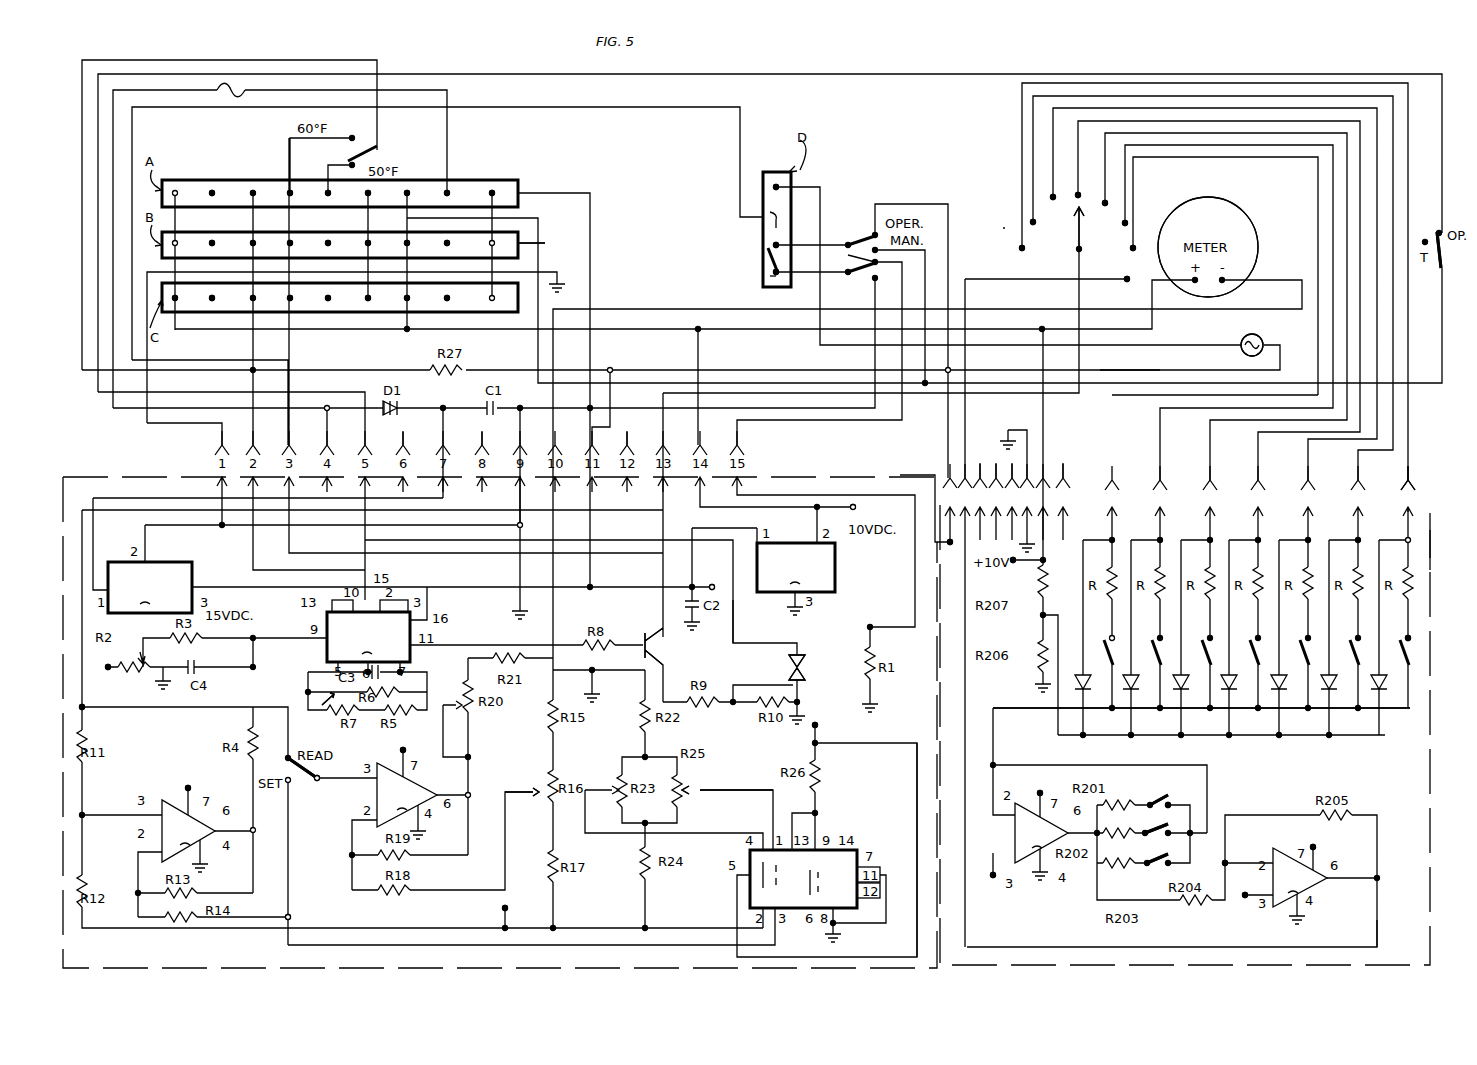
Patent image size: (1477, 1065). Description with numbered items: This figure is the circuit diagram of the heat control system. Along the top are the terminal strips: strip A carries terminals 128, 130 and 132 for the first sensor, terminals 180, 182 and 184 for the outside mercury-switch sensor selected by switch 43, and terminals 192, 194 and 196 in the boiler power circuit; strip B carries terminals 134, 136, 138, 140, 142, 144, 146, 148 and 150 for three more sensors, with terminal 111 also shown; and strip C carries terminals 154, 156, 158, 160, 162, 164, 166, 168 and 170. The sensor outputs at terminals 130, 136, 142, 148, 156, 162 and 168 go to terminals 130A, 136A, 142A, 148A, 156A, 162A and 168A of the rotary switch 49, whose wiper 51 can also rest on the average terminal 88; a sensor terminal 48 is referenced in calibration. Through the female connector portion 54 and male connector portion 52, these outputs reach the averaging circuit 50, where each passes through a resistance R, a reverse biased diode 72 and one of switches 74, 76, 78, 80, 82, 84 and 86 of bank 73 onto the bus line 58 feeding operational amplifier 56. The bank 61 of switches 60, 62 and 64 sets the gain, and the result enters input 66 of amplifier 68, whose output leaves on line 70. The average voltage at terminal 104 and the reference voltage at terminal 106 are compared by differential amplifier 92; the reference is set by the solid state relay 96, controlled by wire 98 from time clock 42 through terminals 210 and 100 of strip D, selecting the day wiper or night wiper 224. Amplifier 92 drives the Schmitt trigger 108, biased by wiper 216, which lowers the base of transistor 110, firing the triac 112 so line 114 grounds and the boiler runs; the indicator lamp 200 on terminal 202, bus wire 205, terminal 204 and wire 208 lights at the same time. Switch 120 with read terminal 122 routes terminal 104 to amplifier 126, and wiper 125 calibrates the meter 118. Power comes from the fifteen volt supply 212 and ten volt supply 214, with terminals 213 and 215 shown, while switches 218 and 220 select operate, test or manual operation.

The switch 43 is at (361, 146).
The terminal of terminal strip A 128 is at (175, 190).
The terminal of terminal strip A 130 is at (212, 191).
The terminal of terminal strip A 132 is at (250, 191).
The terminal of terminal strip A 180 is at (288, 192).
The terminal of terminal strip A 182 is at (326, 192).
The terminal of terminal strip A 184 is at (354, 195).
The terminal of terminal strip A 192 is at (408, 192).
The terminal of terminal strip A 194 is at (448, 192).
The terminal of terminal strip A 196 is at (493, 192).
The terminal of terminal strip B 134 is at (176, 242).
The terminal of terminal strip B 136 is at (213, 242).
The row B contact 111 is at (255, 214).
The terminal of terminal strip B 138 is at (327, 242).
The terminal of terminal strip B 142 is at (329, 241).
The terminal of terminal strip B 144 is at (369, 241).
The terminal of terminal strip B 140 is at (292, 246).
The terminal of terminal strip B 146 is at (409, 246).
The terminal of terminal strip B 148 is at (449, 246).
The terminal of terminal strip B 150 is at (545, 244).
The terminal of terminal strip C 154 is at (177, 302).
The terminal of terminal strip C 156 is at (215, 316).
The terminal of terminal strip C 158 is at (252, 302).
The terminal of terminal strip C 160 is at (292, 302).
The terminal of terminal strip C 162 is at (334, 316).
The terminal of terminal strip C 164 is at (374, 316).
The terminal of terminal strip C 166 is at (419, 316).
The terminal of terminal strip C 168 is at (459, 316).
The terminal of terminal strip C 170 is at (500, 316).
The terminal of terminal strip D 202 is at (781, 186).
The bus wire 205 is at (762, 216).
The terminal of terminal strip D 204 is at (775, 225).
The terminal of terminal strip D 210 is at (768, 246).
The time clock 42 is at (760, 266).
The terminal of terminal strip D 100 is at (765, 279).
The switch 220 is at (840, 268).
The rotary switch 49 is at (998, 228).
The terminal of rotary switch 142A is at (1033, 219).
The terminal of rotary switch 136A is at (1041, 249).
The terminal of rotary switch 130A is at (1028, 236).
The terminal of rotary switch 162A is at (1106, 229).
The wiper 51 is at (1081, 247).
The terminal of rotary switch 148A is at (1079, 195).
The terminal of rotary switch 156A is at (1106, 203).
The terminal of rotary switch 168A is at (1115, 261).
The electric meter 118 is at (1251, 214).
The average terminal 88 is at (1115, 292).
The L.E.D. indicator lamp 200 is at (1252, 337).
The wire 208 is at (1165, 359).
The switch 218 is at (1442, 265).
The female connector portion 54 is at (1411, 480).
The male connector portion 52 is at (1413, 505).
The averaging circuit 50 is at (1443, 582).
The bank of switches 73 is at (1417, 641).
The 10 volt supply terminal 215 is at (681, 709).
The 15 volt supply terminal 213 is at (821, 724).
The 15 volt supply 212 is at (586, 788).
The 10 volt supply 214 is at (796, 567).
The Schmitt trigger 108 is at (368, 631).
The transistor 110 is at (655, 629).
The triac 112 is at (800, 665).
The line 114 is at (752, 648).
The terminal 104 is at (90, 712).
The read terminal 122 is at (286, 758).
The switch 120 is at (303, 779).
The differential amplifier 92 is at (188, 831).
The amplifier 126 is at (443, 695).
The wiper of potentiometer R16 125 is at (505, 788).
The terminal 106 is at (292, 917).
The solid state relay 96 is at (859, 850).
The wire 98 is at (917, 767).
The reverse biased diodes 72 is at (1385, 717).
The switch 86 is at (1100, 645).
The switch 84 is at (1148, 645).
The switch 82 is at (1198, 645).
The switch 80 is at (1246, 645).
The switch 78 is at (1296, 645).
The switch 76 is at (1346, 645).
The switch 74 is at (1394, 645).
The bus line 58 is at (1201, 725).
The operational amplifier 56 is at (1041, 833).
The bank of switches 61 is at (1148, 790).
The switch 60 is at (1175, 791).
The switch 62 is at (1149, 824).
The switch 64 is at (1160, 865).
The input 66 is at (1225, 863).
The amplifier 68 is at (1300, 877).
The line 70 is at (1377, 930).
The terminal 48 is at (108, 670).
The wiper of potentiometer R7 216 is at (328, 710).
The wiper of R25 224 is at (752, 780).